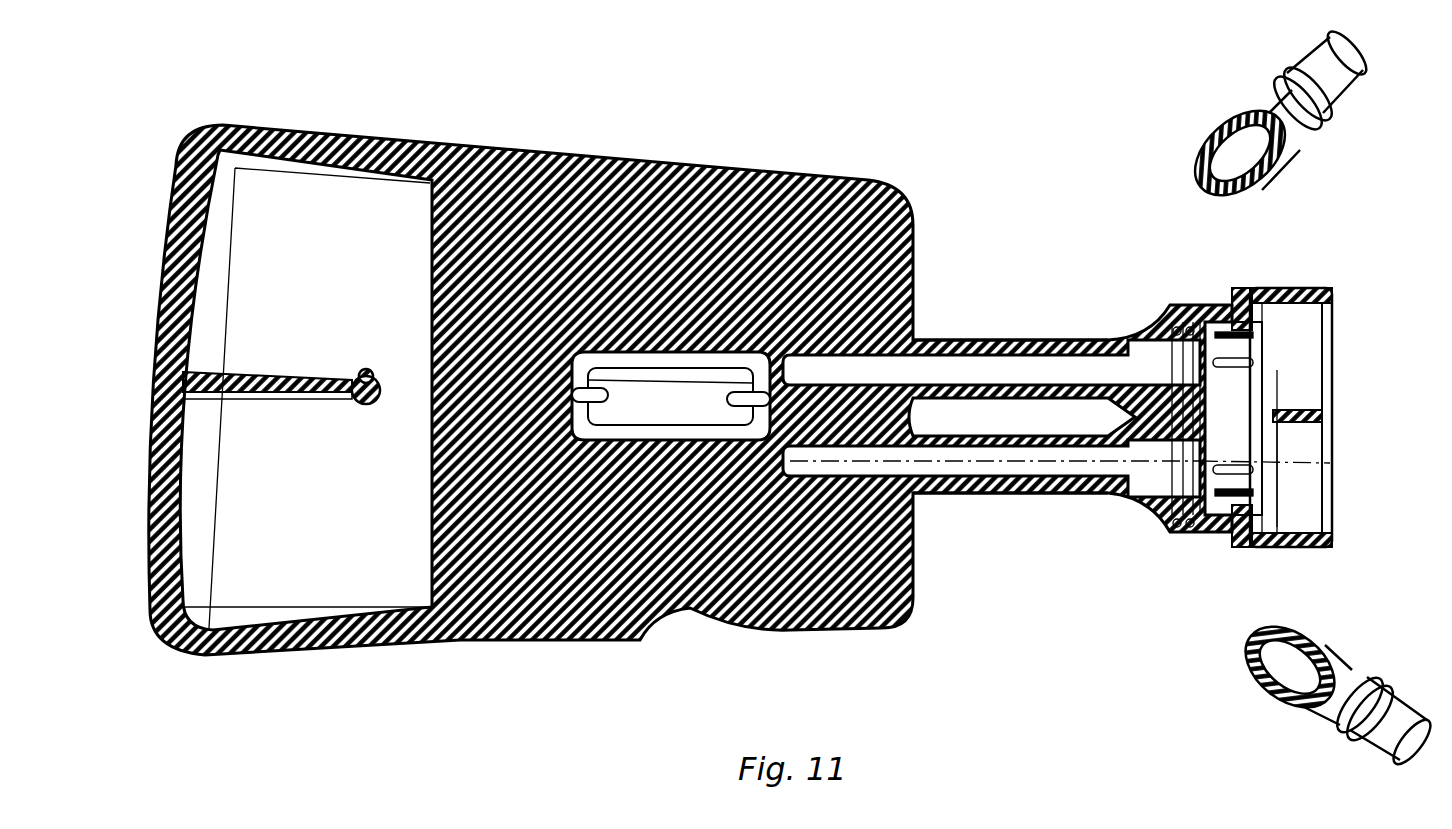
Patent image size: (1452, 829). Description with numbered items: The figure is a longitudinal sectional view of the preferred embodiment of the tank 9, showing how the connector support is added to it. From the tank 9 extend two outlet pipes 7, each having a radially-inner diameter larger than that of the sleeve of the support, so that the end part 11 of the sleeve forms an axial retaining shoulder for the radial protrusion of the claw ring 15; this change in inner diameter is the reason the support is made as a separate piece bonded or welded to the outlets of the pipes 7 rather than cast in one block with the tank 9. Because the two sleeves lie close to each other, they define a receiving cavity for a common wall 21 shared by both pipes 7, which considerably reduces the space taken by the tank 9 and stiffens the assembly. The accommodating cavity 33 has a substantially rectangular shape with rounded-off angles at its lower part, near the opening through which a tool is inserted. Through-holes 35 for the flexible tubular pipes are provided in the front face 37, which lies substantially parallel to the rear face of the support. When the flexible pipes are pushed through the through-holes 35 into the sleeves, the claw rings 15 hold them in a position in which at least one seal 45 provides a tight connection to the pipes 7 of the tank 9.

The tank 9 is at (735, 140).
The outlet pipe 7 is at (1001, 338).
The end part of the sleeve 11 is at (1220, 533).
The seal 45 is at (1212, 320).
The claw ring 15 is at (1284, 300).
The common wall 21 is at (1271, 403).
The accommodating cavity 33 is at (1283, 502).
The through-holes for flexible tubular pipes 35 is at (1325, 506).
The front face 37 is at (1330, 531).